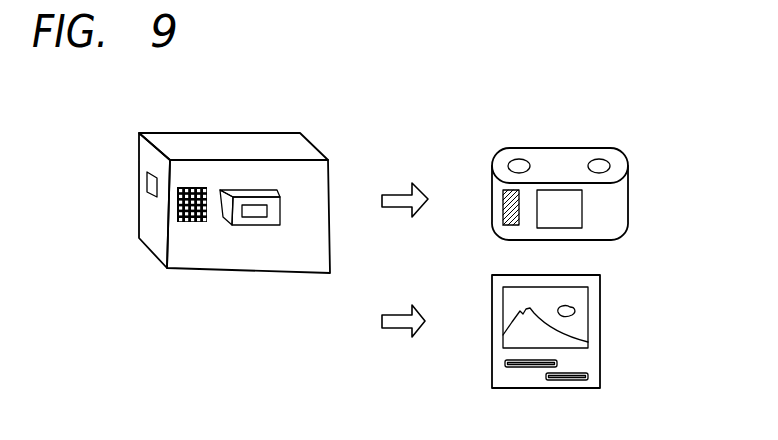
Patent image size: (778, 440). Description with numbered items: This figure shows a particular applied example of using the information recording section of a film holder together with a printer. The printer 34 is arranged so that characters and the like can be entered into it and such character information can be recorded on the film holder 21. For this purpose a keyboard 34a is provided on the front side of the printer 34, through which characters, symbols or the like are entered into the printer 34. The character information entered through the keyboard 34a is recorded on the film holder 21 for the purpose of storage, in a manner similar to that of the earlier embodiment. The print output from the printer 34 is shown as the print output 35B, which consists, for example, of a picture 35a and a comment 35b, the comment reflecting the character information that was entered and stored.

The printer 34 is at (272, 137).
The keyboard 34a is at (190, 223).
The film holder 21 is at (627, 168).
The print output 35B is at (549, 356).
The picture 35a is at (508, 300).
The comment 35b is at (528, 377).